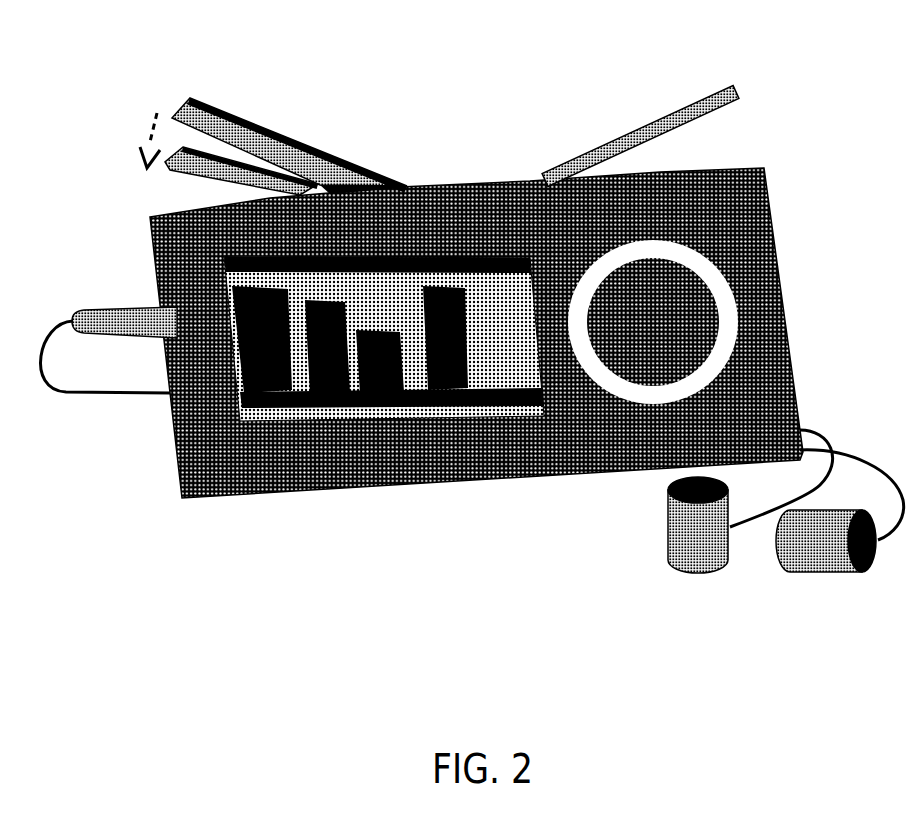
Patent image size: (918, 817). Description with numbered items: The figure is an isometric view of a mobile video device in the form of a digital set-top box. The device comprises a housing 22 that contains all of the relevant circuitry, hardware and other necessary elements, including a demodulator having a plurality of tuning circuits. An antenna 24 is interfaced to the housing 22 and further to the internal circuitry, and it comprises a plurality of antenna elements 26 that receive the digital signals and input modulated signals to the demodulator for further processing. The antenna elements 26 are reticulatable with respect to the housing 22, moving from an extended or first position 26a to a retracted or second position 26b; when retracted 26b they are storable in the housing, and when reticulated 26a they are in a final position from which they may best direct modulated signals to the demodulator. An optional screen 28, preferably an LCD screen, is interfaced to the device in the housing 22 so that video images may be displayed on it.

The housing 22 is at (783, 303).
The antenna 24 is at (687, 90).
The antenna elements 26 is at (710, 110).
The extended or first position 26a is at (172, 118).
The retracted or second position 26b is at (167, 170).
The screen 28 is at (455, 483).